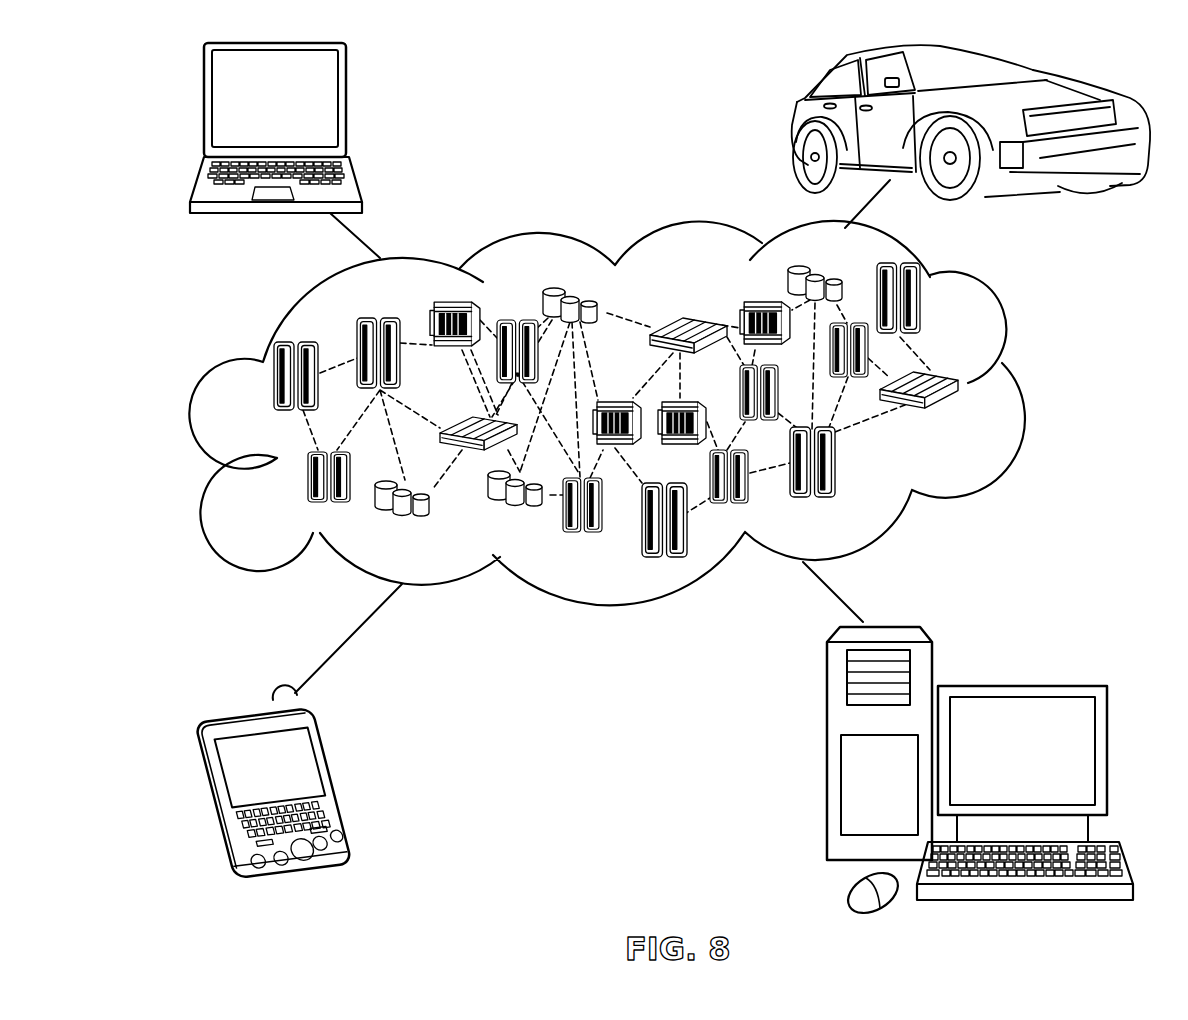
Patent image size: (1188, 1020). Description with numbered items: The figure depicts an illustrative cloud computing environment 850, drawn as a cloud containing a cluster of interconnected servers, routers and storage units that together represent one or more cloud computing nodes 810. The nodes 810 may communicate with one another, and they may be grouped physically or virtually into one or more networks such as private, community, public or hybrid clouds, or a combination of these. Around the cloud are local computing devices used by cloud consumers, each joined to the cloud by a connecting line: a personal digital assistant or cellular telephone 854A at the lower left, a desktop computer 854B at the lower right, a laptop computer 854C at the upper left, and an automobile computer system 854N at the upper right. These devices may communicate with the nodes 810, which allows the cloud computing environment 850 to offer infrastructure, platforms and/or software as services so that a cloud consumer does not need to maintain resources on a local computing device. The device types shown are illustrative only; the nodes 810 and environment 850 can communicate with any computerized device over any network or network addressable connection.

The cloud computing environment 850 is at (1020, 389).
The cloud computing nodes 810 is at (966, 421).
The laptop computer 854C is at (346, 107).
The automobile computer system 854N is at (796, 124).
The personal digital assistant (PDA) or cellular telephone 854A is at (336, 781).
The desktop computer 854B is at (1020, 686).